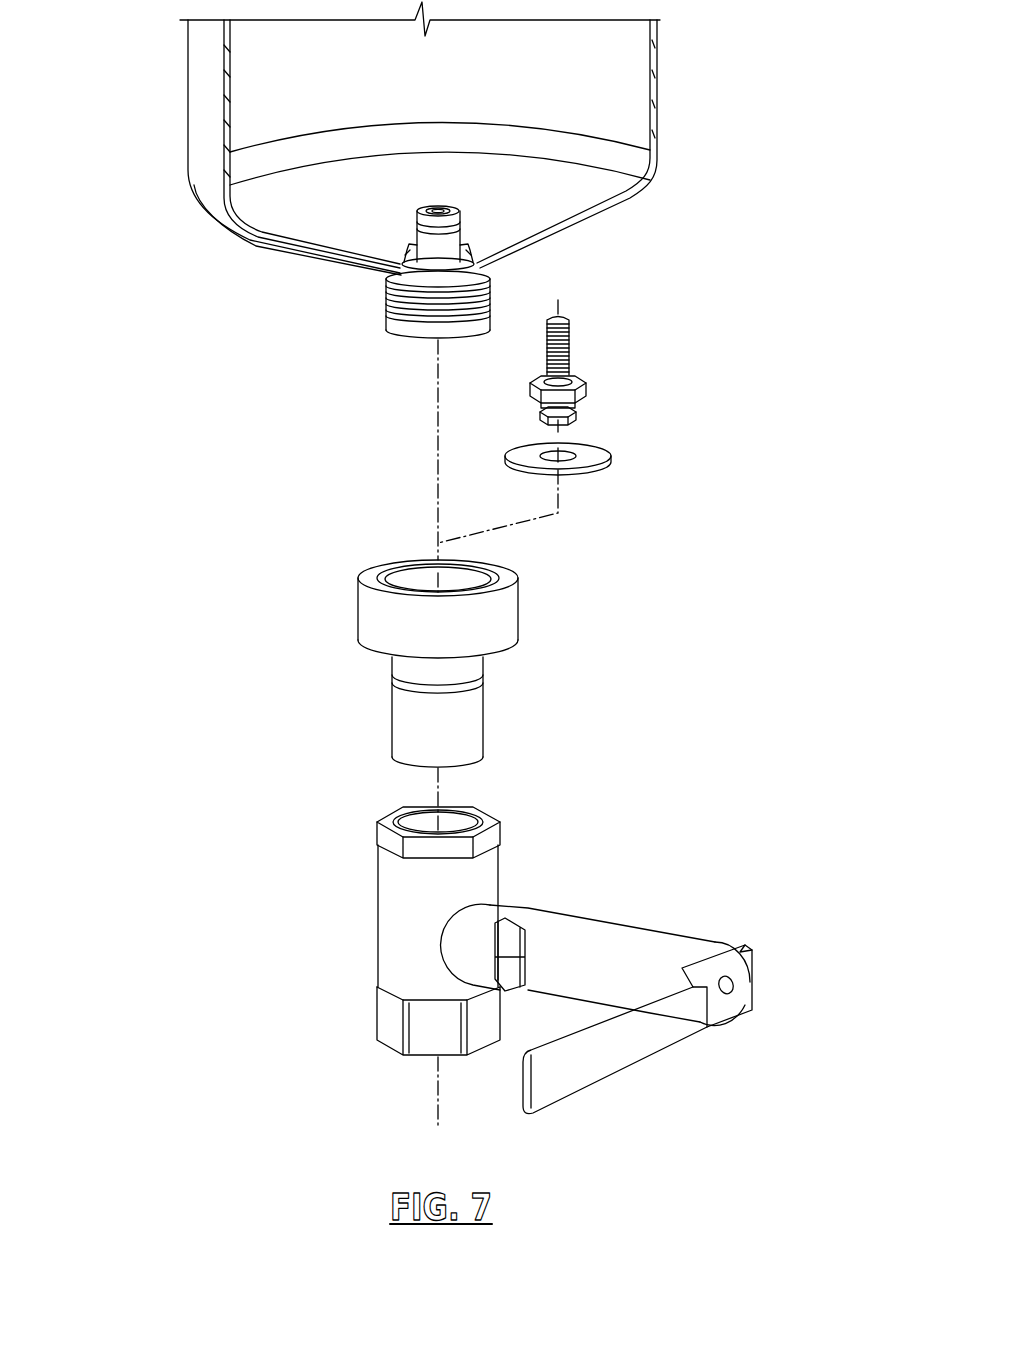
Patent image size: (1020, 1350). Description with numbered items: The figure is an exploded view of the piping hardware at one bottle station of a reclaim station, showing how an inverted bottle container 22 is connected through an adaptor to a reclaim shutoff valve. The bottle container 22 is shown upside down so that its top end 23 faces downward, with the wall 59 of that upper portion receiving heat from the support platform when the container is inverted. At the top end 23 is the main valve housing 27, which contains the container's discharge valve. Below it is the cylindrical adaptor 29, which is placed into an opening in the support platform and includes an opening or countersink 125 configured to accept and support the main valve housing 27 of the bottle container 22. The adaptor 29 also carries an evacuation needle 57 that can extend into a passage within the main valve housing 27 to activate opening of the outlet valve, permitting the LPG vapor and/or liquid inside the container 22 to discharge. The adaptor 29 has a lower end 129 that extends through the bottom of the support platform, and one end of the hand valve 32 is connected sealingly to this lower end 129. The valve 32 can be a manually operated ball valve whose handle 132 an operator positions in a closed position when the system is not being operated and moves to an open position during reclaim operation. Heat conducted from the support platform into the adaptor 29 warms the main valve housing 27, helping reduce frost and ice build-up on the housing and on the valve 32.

The bottle container 22 is at (695, 122).
The wall 59 is at (250, 118).
The top end 23 is at (600, 221).
The main valve housing 27 is at (403, 323).
The evacuation needle 57 is at (572, 343).
The opening or countersink 125 is at (415, 592).
The cylindrical adaptor 29 is at (503, 617).
The lower end 129 is at (410, 728).
The valve 32 is at (395, 925).
The handle 132 is at (637, 1062).